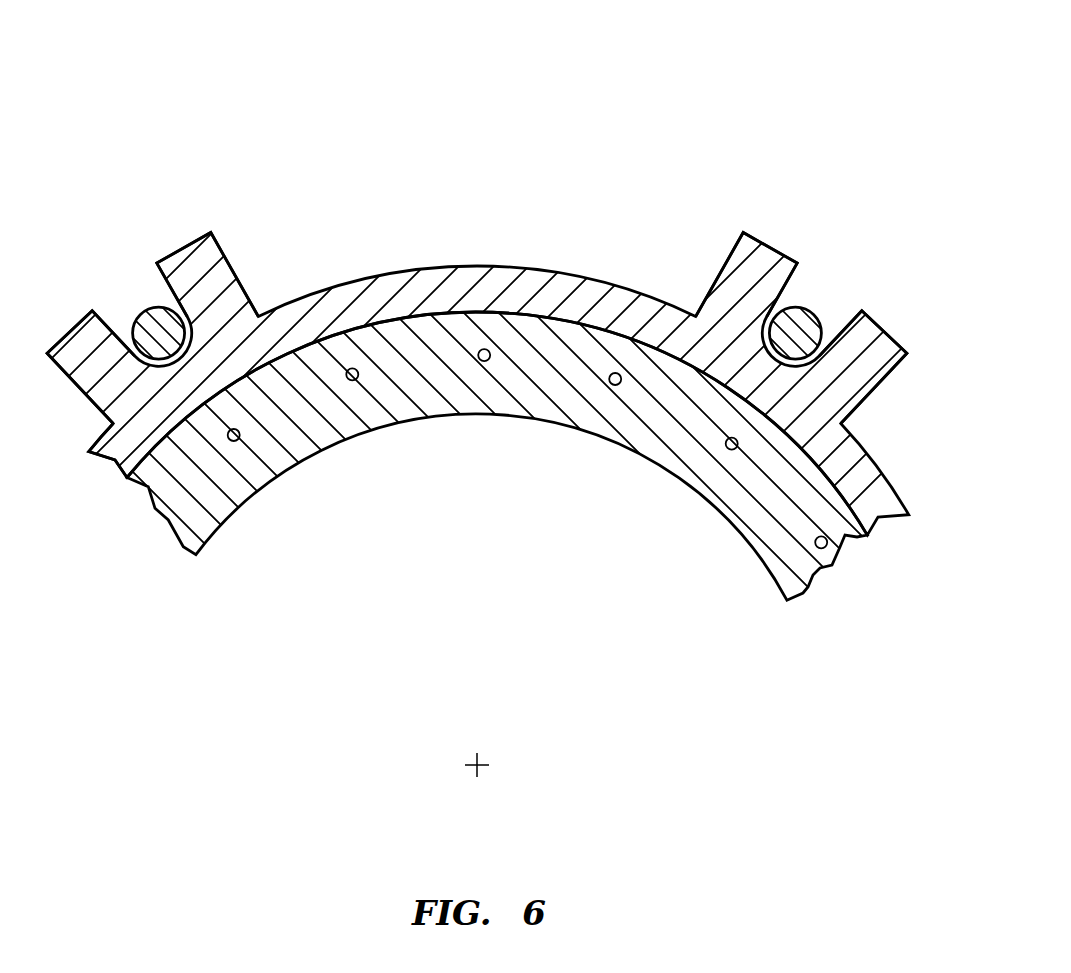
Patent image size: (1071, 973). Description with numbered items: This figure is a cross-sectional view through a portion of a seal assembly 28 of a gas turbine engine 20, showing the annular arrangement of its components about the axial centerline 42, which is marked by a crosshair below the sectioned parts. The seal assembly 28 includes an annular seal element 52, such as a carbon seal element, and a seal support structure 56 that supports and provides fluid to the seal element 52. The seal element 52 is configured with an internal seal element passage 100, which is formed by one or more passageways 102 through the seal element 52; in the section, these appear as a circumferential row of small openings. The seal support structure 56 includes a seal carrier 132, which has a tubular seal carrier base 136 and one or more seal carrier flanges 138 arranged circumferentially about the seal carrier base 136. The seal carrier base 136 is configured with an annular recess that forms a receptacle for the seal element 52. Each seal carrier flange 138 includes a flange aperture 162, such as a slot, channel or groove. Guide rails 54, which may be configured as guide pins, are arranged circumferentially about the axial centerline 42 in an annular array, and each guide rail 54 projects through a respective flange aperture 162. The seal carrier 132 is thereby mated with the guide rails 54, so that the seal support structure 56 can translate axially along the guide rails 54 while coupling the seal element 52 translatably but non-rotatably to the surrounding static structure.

The gas turbine engine section 20 is at (684, 95).
The seal assembly 28 is at (718, 120).
The axial centerline 42 is at (478, 769).
The seal element 52 is at (157, 524).
The guide rails 54 is at (140, 301).
The seal support structure 56 is at (535, 366).
The seal carrier 132 is at (419, 266).
The seal element passage 100 is at (528, 450).
The passageways 102 is at (236, 441).
The seal carrier base 136 is at (92, 468).
The seal carrier flanges 138 is at (235, 262).
The flange aperture 162 is at (115, 311).